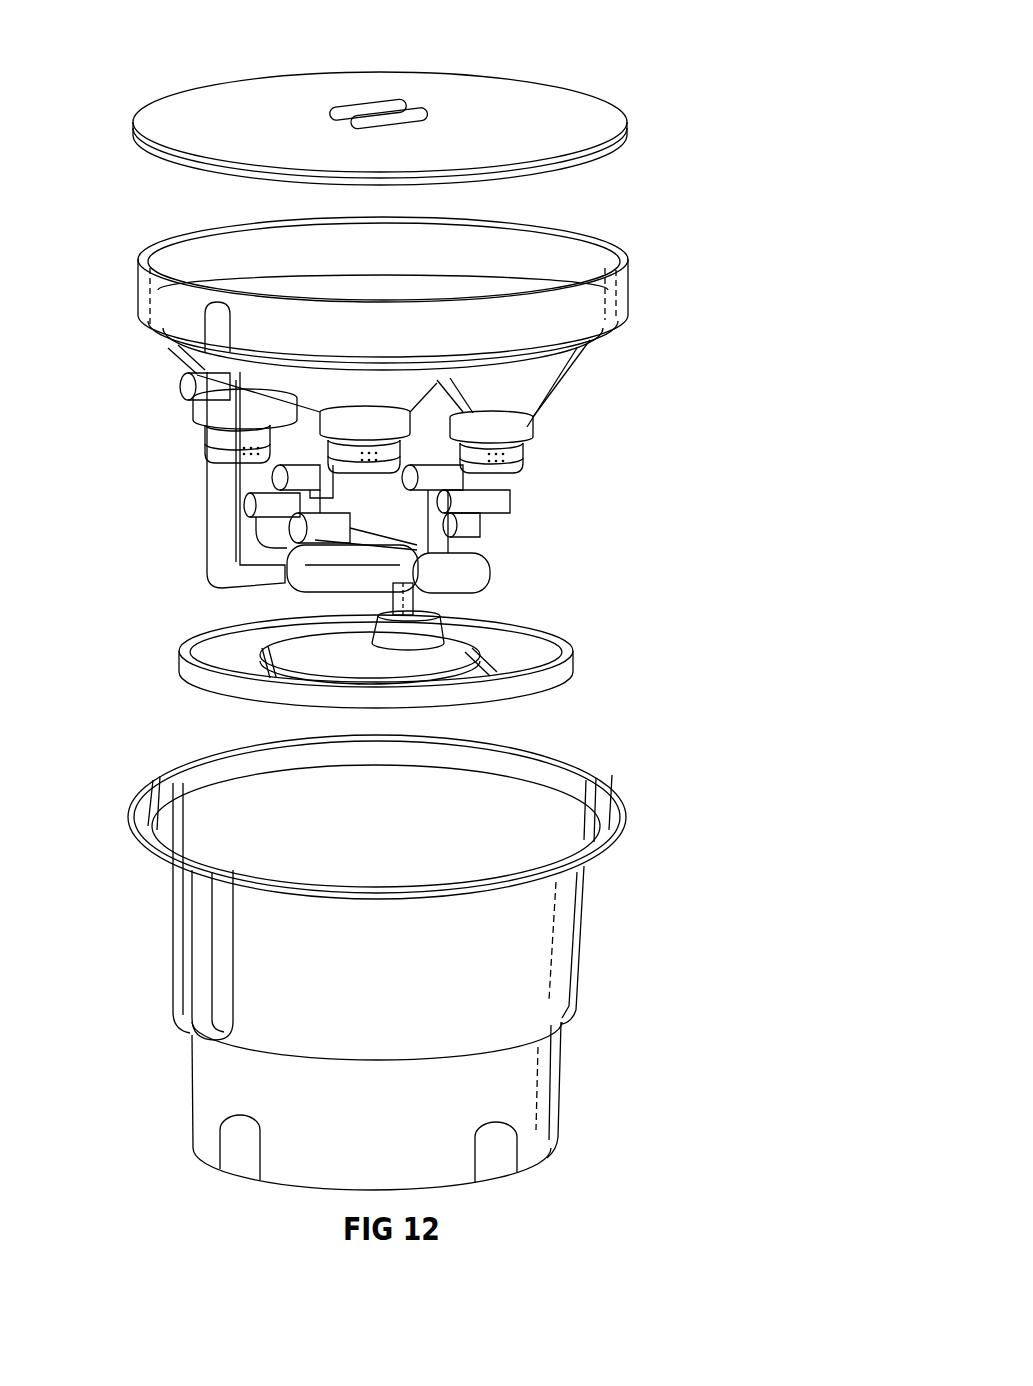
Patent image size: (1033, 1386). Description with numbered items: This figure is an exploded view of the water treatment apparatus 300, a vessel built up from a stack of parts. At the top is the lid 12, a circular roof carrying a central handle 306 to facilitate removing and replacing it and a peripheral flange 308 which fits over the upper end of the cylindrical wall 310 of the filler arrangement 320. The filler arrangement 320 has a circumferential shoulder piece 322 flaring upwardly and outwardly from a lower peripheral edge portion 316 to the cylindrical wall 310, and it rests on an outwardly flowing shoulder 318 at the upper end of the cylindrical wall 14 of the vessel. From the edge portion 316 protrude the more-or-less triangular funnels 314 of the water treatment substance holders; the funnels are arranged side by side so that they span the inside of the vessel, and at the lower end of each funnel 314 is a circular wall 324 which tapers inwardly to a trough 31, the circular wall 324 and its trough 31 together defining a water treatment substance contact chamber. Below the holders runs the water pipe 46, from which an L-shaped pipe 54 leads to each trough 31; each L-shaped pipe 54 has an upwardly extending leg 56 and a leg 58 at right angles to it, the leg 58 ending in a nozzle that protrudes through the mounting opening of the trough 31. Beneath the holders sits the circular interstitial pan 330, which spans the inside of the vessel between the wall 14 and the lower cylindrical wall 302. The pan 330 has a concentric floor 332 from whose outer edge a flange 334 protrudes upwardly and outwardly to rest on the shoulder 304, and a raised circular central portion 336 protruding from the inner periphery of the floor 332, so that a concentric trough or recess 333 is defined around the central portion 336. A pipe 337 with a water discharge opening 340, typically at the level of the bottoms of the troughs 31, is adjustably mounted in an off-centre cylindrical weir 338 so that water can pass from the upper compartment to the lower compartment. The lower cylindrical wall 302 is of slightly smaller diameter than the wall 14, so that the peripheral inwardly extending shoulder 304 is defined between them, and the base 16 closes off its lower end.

The lid 12 is at (423, 97).
The central handle 306 is at (380, 117).
The peripheral flange 308 is at (633, 138).
The cylindrical wall 14 is at (404, 984).
The base 16 is at (305, 1183).
The water treatment apparatus 300 is at (474, 420).
The filler arrangement 320 is at (463, 356).
The cylindrical wall 310 is at (618, 302).
The circumferential shoulder piece 322 is at (562, 373).
The edge portion 316 is at (560, 385).
The funnel 314 is at (550, 415).
The circular wall 324 is at (543, 450).
The trough 31 is at (537, 462).
The water pipe 46 is at (223, 487).
The leg 58 is at (303, 473).
The upwardly extending leg 56 is at (325, 498).
The L-shaped pipe 54 is at (300, 497).
The water discharge opening 340 is at (435, 571).
The pipe 337 is at (408, 593).
The cylindrical weir 338 is at (430, 630).
The interstitial pan 330 is at (406, 659).
The flange 334 is at (543, 647).
The trough or recess 333 is at (240, 658).
The central portion 336 is at (278, 665).
The floor 332 is at (505, 663).
The shoulder 318 is at (463, 893).
The shoulder 304 is at (573, 1010).
The cylindrical wall 302 is at (426, 1127).